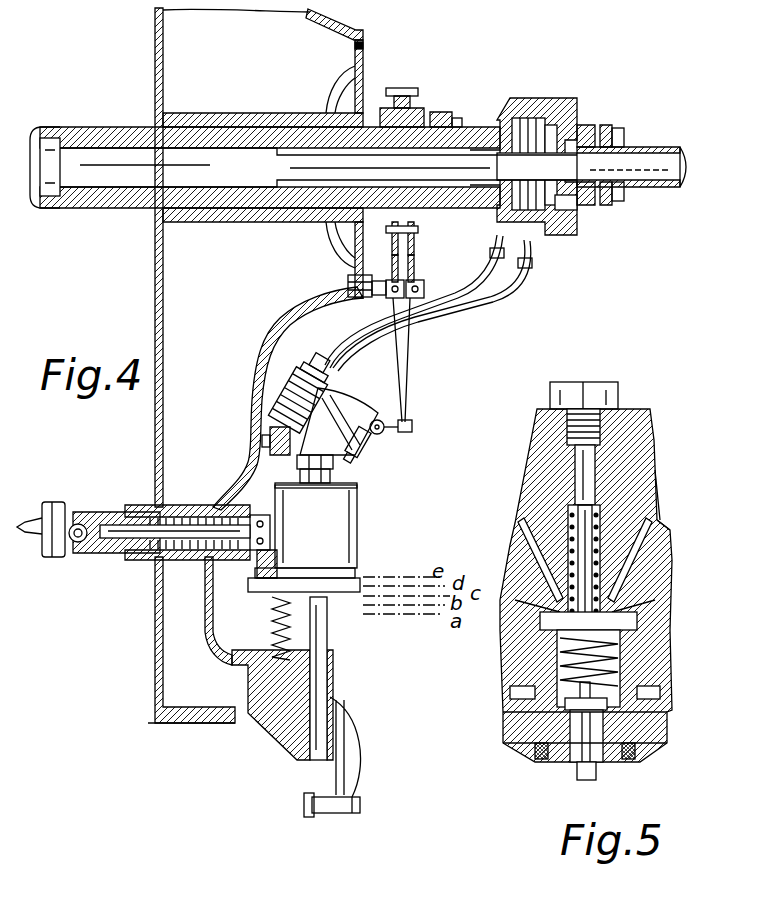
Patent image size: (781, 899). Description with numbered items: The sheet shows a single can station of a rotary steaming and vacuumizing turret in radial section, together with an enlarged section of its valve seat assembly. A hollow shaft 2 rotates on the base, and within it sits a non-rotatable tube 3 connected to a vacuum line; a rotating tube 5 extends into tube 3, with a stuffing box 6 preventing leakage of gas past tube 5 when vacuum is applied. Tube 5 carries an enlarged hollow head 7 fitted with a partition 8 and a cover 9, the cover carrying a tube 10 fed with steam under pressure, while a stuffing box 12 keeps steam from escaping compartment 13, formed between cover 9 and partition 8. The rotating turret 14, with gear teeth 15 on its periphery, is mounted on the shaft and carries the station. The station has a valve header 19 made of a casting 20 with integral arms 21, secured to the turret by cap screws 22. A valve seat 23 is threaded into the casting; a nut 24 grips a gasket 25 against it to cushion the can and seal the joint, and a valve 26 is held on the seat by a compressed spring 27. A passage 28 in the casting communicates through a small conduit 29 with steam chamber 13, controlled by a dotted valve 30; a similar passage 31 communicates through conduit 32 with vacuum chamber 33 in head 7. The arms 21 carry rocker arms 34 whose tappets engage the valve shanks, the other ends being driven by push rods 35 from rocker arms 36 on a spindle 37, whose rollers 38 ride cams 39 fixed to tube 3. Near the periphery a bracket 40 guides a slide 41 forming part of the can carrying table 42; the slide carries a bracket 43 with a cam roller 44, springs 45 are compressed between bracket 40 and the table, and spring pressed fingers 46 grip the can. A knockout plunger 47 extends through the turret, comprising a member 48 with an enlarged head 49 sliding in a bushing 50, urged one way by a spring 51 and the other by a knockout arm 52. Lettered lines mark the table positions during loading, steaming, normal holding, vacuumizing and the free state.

In FIG. 4, the hollow shaft 2 is at (62, 138).
In FIG. 4, the non-rotatable tube 3 is at (84, 212).
In FIG. 4, the rotating tube 5 is at (488, 145).
In FIG. 4, the stuffing box 6 is at (445, 113).
In FIG. 4, the hollow head 7 is at (540, 108).
In FIG. 4, the partition 8 is at (558, 128).
In FIG. 4, the cover 9 is at (580, 126).
In FIG. 4, the tube 10 is at (625, 146).
In FIG. 4, the stuffing box 12 is at (604, 127).
In FIG. 4, the compartment 13 is at (560, 205).
In FIG. 4, the rotating turret 14 is at (155, 283).
In FIG. 4, the gear teeth 15 is at (160, 723).
In FIG. 4, the valve header 19 is at (307, 457).
In FIG. 5, the casting 20 is at (655, 432).
In FIG. 4, the arms 21 is at (355, 410).
In FIG. 4, the cap screws 22 is at (270, 437).
In FIG. 5, the valve seat 23 is at (660, 696).
In FIG. 5, the nut 24 is at (668, 735).
In FIG. 5, the gasket 25 is at (540, 762).
In FIG. 5, the valve 26 is at (600, 765).
In FIG. 5, the spring 27 is at (640, 604).
In FIG. 5, the passage 28 is at (520, 578).
In FIG. 4, the conduit 29 is at (505, 280).
In FIG. 4, the valve 30 is at (300, 385).
In FIG. 5, the passage 31 is at (668, 528).
In FIG. 4, the conduit 32 is at (488, 263).
In FIG. 4, the chamber 33 is at (516, 125).
In FIG. 4, the rocker arms 34 is at (412, 427).
In FIG. 4, the push rod 35 is at (410, 340).
In FIG. 4, the rocker arm 36 is at (397, 298).
In FIG. 4, the spindle 37 is at (412, 298).
In FIG. 4, the rollers 38 is at (405, 280).
In FIG. 4, the cams 39 is at (412, 232).
In FIG. 4, the bracket 40 is at (248, 715).
In FIG. 4, the slide 41 is at (320, 630).
In FIG. 4, the can carrying table 42 is at (350, 595).
In FIG. 4, the bracket 43 is at (350, 740).
In FIG. 4, the cam roller 44 is at (314, 816).
In FIG. 4, the springs 45 is at (271, 628).
In FIG. 4, the spring pressed fingers 46 is at (256, 578).
In FIG. 4, the knockout plunger 47 is at (78, 545).
In FIG. 4, the member 48 is at (125, 553).
In FIG. 4, the enlarged head 49 is at (272, 512).
In FIG. 4, the bushing 50 is at (258, 516).
In FIG. 4, the spring 51 is at (150, 506).
In FIG. 4, the knockout arm 52 is at (50, 550).